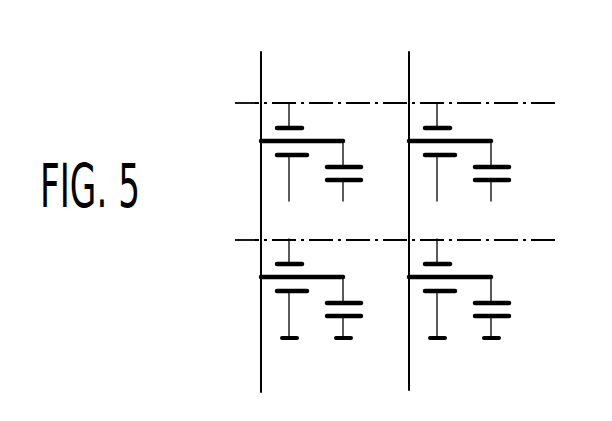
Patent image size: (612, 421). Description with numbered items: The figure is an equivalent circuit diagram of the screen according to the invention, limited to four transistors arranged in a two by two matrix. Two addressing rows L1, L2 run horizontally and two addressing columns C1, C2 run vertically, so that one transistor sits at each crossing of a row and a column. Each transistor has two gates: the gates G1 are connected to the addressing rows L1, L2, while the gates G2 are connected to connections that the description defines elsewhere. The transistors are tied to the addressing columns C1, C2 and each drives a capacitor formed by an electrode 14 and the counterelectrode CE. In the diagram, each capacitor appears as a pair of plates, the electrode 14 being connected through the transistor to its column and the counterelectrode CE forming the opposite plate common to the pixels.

The addressing column C1 is at (259, 207).
The addressing column C2 is at (411, 206).
The addressing row L1 is at (371, 97).
The addressing row L2 is at (372, 235).
The gate G1 is at (291, 125).
The gate G2 is at (277, 157).
The electrode 14 is at (362, 165).
The counterelectrode CE is at (350, 181).